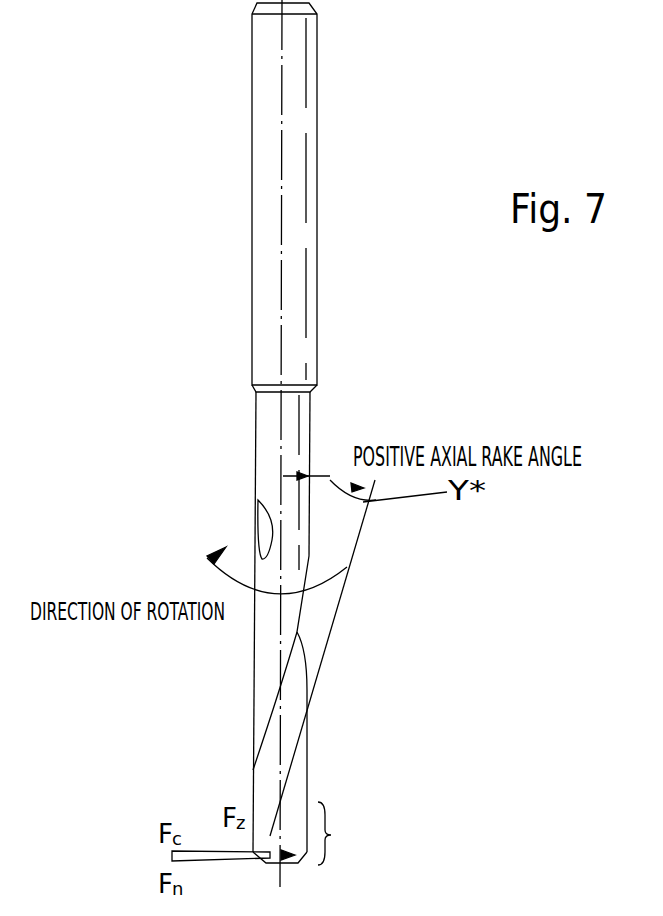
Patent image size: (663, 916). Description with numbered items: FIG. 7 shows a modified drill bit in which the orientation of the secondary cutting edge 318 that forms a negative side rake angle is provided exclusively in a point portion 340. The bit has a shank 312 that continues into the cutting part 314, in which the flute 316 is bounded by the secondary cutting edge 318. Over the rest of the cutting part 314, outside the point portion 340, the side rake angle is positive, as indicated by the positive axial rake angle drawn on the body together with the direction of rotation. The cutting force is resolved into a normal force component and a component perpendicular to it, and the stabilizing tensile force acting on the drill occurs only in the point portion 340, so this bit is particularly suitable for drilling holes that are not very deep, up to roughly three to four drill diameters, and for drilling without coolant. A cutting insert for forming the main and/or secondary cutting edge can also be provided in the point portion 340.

The shank 312 is at (298, 325).
The cutting part 314 is at (293, 556).
The flute 316 is at (297, 730).
The secondary cutting edge 318 is at (280, 845).
The point portion 340 is at (332, 835).